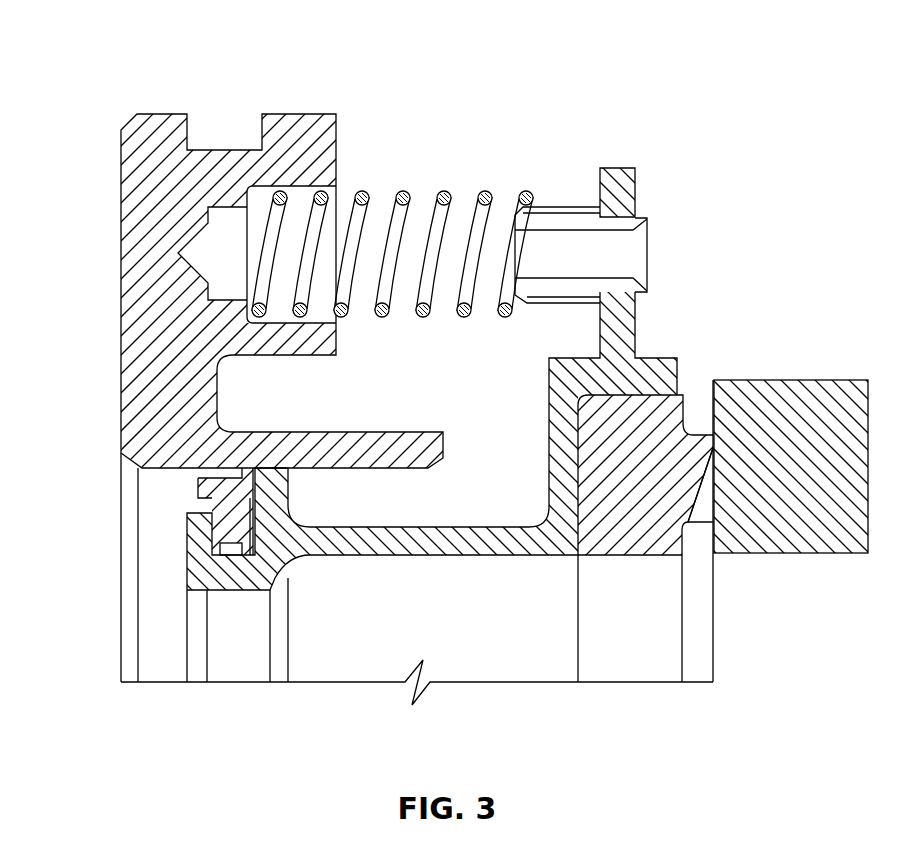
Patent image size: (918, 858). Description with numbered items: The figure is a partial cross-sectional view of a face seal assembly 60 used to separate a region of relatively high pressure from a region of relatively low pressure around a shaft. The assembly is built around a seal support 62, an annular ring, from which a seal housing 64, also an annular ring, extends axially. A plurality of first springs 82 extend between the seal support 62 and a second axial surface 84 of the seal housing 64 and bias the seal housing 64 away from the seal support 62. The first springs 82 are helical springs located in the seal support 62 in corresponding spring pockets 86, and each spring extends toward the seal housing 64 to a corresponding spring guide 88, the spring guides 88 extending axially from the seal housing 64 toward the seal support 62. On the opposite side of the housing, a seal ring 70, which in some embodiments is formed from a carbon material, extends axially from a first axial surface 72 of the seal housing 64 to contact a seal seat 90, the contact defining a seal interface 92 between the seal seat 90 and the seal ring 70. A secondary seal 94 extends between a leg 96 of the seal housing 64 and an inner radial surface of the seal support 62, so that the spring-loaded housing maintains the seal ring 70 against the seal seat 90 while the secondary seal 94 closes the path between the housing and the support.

The face seal assembly 60 is at (125, 58).
The seal support 62 is at (135, 270).
The seal housing 64 is at (625, 330).
The seal ring 70 is at (627, 543).
The first axial surface 72 is at (630, 185).
The first springs 82 is at (445, 192).
The second axial surface 84 is at (612, 170).
The spring pockets 86 is at (270, 185).
The spring guides 88 is at (640, 252).
The seal seat 90 is at (797, 388).
The seal interface 92 is at (713, 495).
The secondary seal 94 is at (223, 537).
The leg 96 is at (468, 540).